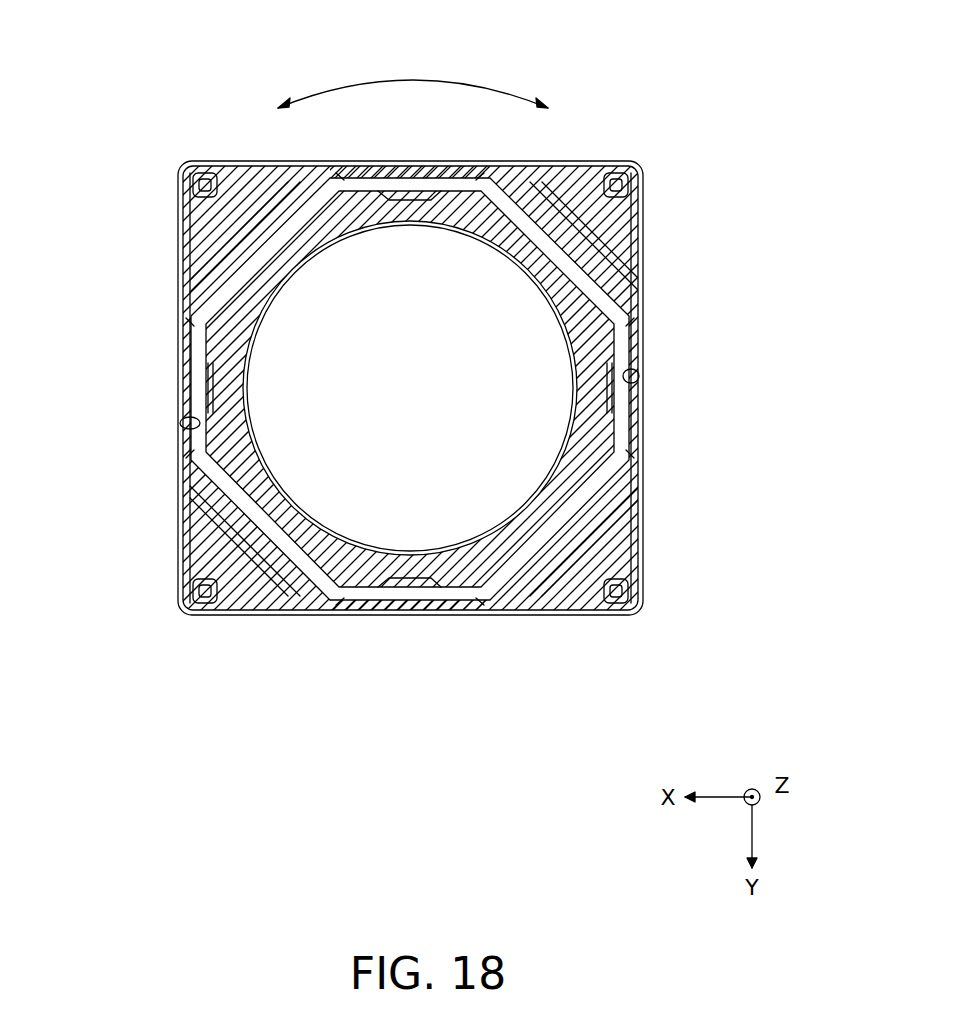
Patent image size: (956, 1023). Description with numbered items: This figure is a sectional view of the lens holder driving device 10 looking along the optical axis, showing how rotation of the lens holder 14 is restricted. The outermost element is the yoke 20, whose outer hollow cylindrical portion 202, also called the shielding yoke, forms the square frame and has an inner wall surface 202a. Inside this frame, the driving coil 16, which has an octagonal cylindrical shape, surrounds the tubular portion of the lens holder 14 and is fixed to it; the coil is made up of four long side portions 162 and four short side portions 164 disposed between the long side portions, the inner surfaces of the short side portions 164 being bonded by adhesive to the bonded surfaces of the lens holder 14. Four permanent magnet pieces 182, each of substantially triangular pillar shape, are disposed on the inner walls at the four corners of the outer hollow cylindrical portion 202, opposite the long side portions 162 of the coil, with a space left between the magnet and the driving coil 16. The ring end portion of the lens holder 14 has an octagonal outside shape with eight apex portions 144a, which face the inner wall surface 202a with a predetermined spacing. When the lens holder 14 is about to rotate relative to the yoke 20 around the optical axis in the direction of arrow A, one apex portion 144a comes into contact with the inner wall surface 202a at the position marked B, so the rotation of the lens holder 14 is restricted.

The lens holder driving device 10 is at (698, 158).
The lens holder 14 is at (573, 490).
The driving coil 16 is at (622, 437).
The yoke 20 is at (557, 165).
The apex portion 144a is at (343, 171).
The long side portion 162 is at (222, 285).
The short side portion 164 is at (427, 172).
The permanent magnet piece 182 is at (244, 165).
The outer hollow cylindrical portion 202 is at (636, 216).
The inner wall surface 202a is at (187, 427).
The arrow A is at (425, 80).
The position B is at (643, 343).